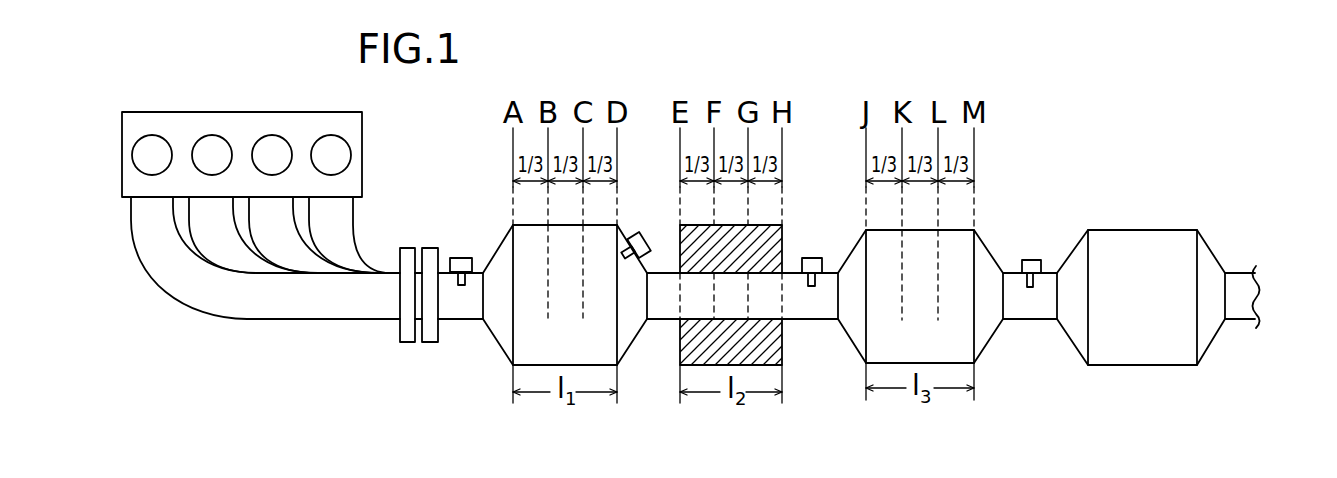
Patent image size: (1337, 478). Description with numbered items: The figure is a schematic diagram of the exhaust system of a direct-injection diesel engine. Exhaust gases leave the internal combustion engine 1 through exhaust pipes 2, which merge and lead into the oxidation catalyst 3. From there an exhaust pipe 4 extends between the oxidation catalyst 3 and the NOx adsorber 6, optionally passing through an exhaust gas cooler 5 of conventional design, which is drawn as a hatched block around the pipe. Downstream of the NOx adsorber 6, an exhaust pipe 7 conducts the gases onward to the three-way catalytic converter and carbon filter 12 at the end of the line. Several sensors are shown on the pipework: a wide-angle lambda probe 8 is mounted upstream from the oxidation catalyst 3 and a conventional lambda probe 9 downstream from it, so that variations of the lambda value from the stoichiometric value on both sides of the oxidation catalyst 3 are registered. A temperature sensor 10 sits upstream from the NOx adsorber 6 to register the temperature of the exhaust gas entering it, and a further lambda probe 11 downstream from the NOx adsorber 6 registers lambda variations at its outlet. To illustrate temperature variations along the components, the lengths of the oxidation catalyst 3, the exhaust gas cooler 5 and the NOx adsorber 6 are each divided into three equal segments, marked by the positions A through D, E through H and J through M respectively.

The internal combustion engine 1 is at (241, 121).
The exhaust pipes 2 is at (233, 303).
The oxidation catalyst 3 is at (500, 317).
The exhaust pipe 4 is at (660, 310).
The exhaust gas cooler 5 is at (683, 345).
The NOx adsorber 6 is at (848, 325).
The exhaust pipe 7 is at (1048, 282).
The wide-angle lambda probe 8 is at (460, 258).
The lambda probe 9 is at (648, 240).
The temperature sensor 10 is at (818, 258).
The lambda probe 11 is at (1022, 260).
The three-way catalytic converter and carbon filter 12 is at (1133, 240).